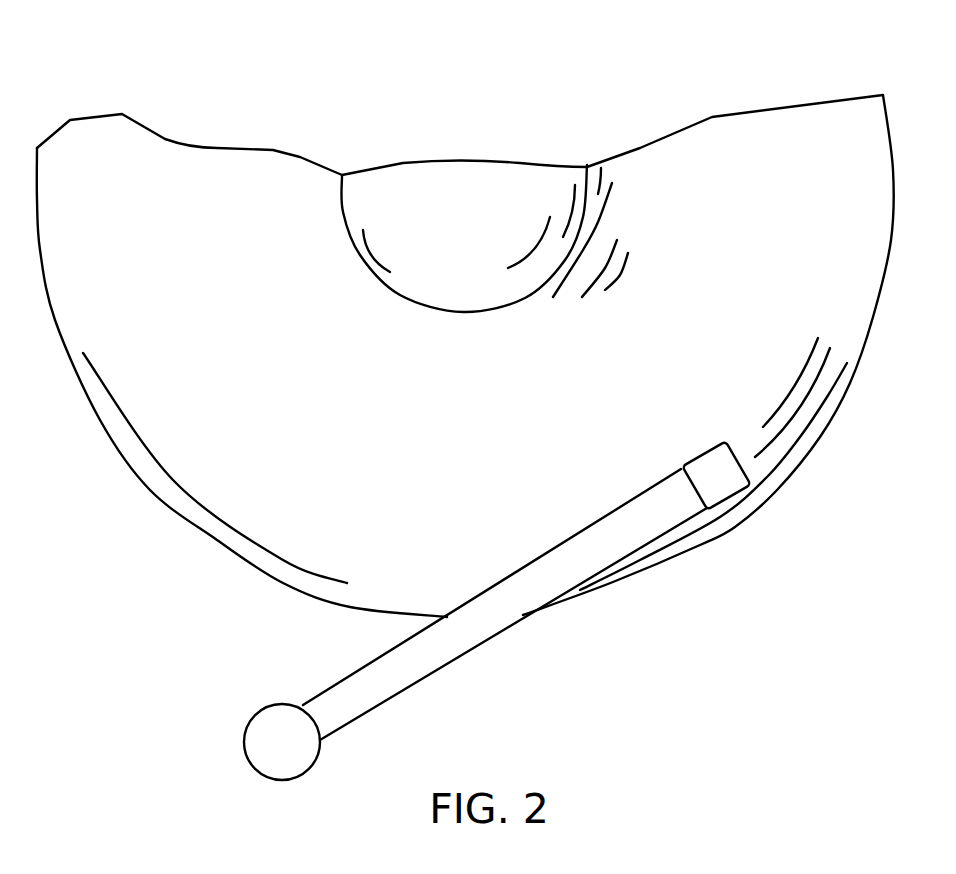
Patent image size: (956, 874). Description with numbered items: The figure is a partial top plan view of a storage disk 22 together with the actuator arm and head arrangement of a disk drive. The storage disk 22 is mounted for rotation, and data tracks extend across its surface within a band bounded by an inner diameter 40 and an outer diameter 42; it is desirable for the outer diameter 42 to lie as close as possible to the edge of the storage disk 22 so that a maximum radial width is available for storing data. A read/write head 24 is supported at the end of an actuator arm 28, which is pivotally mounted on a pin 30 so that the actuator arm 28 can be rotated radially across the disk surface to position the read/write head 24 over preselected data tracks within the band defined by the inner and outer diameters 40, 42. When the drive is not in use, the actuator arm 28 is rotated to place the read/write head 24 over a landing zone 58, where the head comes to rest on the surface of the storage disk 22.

The storage disk 22 is at (831, 95).
The read/write head 24 is at (720, 455).
The actuator arm 28 is at (597, 525).
The pin 30 is at (277, 702).
The inner diameter 40 is at (612, 205).
The outer diameter 42 is at (213, 512).
The landing zone 58 is at (601, 168).